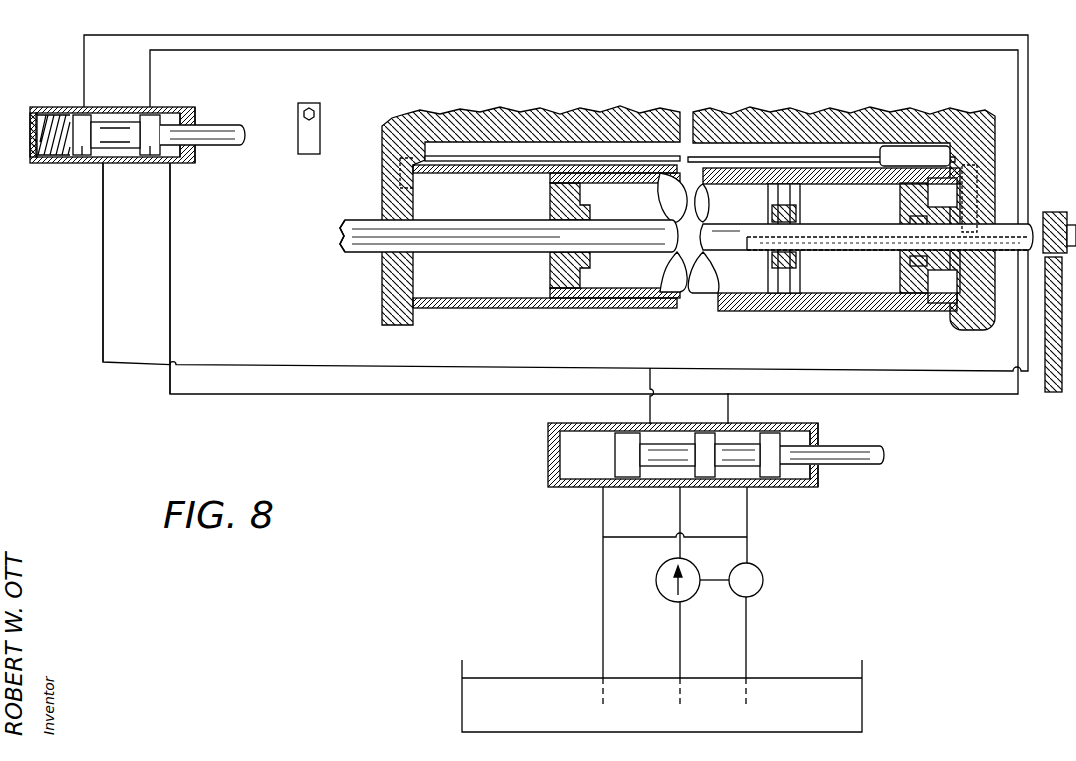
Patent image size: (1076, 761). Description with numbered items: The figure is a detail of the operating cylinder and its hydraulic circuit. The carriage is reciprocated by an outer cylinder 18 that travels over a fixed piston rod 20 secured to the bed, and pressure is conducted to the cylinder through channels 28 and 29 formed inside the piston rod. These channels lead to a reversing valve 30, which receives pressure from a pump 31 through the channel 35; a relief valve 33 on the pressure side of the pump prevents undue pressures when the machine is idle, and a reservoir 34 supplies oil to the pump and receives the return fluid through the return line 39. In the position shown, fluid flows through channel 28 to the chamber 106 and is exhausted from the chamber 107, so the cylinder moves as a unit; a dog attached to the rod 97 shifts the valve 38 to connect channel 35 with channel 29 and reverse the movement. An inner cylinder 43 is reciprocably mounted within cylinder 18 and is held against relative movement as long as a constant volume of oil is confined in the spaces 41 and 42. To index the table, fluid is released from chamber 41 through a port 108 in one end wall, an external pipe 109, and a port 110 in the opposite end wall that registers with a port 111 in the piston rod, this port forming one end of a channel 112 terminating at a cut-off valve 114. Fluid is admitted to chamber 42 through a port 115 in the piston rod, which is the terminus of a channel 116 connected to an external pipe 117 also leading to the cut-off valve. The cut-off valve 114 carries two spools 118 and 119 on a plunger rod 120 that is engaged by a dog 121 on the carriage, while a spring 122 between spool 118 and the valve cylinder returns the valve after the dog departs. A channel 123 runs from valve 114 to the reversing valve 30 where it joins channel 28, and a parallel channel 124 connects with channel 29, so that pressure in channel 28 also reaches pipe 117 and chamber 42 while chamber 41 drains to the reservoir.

The external pipe 117 is at (144, 35).
The channel 112 is at (246, 50).
The spring 122 is at (45, 125).
The cut-off valve 114 is at (56, 163).
The spool 118 is at (84, 163).
The spool 119 is at (125, 163).
The plunger rod 120 is at (233, 141).
The dog 121 is at (302, 120).
The channel 123 is at (103, 259).
The channel 124 is at (171, 273).
The rod 97 is at (358, 200).
The port 108 is at (414, 190).
The external pipe 109 is at (690, 154).
The inner cylinder 43 is at (608, 184).
The piston rod 20 is at (626, 251).
The space 41 is at (442, 288).
The cylinder 18 is at (648, 312).
The chamber 106 is at (752, 300).
The channel 28 is at (853, 248).
The space 42 is at (930, 167).
The port 115 is at (948, 222).
The port 110 is at (990, 223).
The port 111 is at (985, 238).
The channel 116 is at (1043, 228).
The channel 29 is at (900, 292).
The chamber 107 is at (900, 306).
The reversing valve 30 is at (787, 424).
The channel 35 is at (682, 513).
The valve 38 is at (773, 477).
The return line 39 is at (602, 568).
The pump 31 is at (700, 569).
The relief valve 33 is at (764, 574).
The reservoir 34 is at (850, 696).